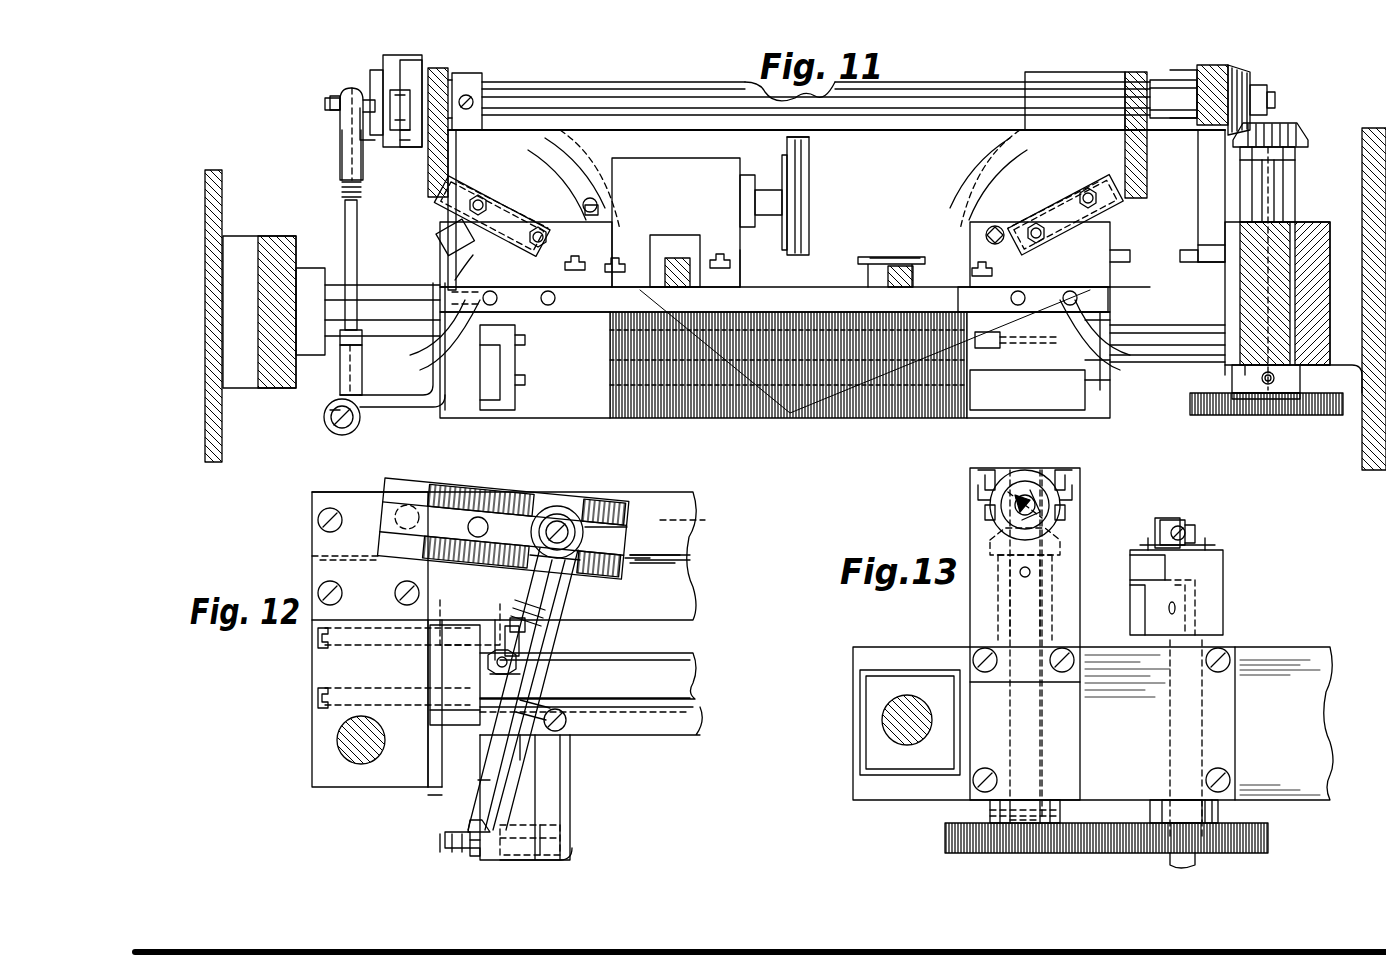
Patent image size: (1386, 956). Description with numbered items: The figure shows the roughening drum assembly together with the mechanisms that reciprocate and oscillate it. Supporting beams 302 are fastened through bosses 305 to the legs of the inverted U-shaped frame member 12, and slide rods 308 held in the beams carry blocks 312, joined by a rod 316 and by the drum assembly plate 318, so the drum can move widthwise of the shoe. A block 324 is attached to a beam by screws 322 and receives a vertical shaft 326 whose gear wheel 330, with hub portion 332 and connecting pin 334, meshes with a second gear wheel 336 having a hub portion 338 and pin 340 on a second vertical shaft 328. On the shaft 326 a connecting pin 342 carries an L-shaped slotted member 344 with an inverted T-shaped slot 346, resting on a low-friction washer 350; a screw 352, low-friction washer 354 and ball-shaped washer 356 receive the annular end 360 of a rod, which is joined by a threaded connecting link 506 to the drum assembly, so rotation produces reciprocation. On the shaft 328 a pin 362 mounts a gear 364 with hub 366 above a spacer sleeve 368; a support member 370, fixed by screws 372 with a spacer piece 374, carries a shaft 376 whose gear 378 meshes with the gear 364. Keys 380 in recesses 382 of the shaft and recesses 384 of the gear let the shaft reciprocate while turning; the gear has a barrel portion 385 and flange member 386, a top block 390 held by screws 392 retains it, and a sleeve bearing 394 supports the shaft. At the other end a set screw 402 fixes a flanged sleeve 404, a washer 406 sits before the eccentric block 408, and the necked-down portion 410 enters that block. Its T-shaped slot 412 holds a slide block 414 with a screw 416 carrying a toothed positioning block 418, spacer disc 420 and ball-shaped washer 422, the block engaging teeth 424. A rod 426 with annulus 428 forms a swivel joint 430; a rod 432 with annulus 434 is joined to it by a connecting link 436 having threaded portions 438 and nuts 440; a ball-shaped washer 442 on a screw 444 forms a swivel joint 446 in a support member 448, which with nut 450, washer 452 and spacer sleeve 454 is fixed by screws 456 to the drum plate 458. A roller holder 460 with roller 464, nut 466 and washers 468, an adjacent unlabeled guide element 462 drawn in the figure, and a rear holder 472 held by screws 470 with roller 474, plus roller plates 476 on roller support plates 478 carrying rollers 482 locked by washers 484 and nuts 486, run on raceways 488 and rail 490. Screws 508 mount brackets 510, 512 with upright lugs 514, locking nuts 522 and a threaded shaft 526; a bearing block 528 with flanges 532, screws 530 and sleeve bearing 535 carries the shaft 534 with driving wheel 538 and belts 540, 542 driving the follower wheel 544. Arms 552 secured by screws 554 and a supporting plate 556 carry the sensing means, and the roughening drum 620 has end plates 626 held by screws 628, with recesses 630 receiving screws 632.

In FIG. 11, the inverted U-shaped frame member 12 is at (208, 172).
In FIG. 11, the drum assembly supporting beams 302 is at (270, 382).
In FIG. 12, the drum assembly supporting beams 302 is at (370, 639).
In FIG. 13, the drum assembly supporting beams 302 is at (900, 647).
In FIG. 11, the bosses 305 is at (238, 236).
In FIG. 11, the drum assembly slide rods 308 is at (1215, 345).
In FIG. 12, the drum assembly slide rods 308 is at (340, 739).
In FIG. 13, the drum assembly slide rods 308 is at (900, 712).
In FIG. 11, the blocks 312 is at (545, 80).
In FIG. 11, the rod 316 is at (702, 90).
In FIG. 11, the drum assembly plate 318 is at (450, 82).
In FIG. 12, the drum assembly plate 318 is at (690, 506).
In FIG. 11, the screws 322 is at (1235, 380).
In FIG. 13, the screws 322 is at (1228, 665).
In FIG. 11, the block 324 is at (1225, 350).
In FIG. 13, the block 324 is at (1122, 650).
In FIG. 13, the vertical shaft 326 is at (1165, 740).
In FIG. 11, the second vertical shaft 328 is at (1300, 185).
In FIG. 13, the second vertical shaft 328 is at (1045, 737).
In FIG. 13, the gear wheel 330 is at (1268, 836).
In FIG. 13, the hub portion 332 is at (1168, 808).
In FIG. 13, the connecting pin 334 is at (1218, 812).
In FIG. 11, the second gear wheel 336 is at (1190, 408).
In FIG. 13, the second gear wheel 336 is at (945, 838).
In FIG. 11, the hub portion 338 is at (1232, 402).
In FIG. 13, the hub portion 338 is at (1065, 810).
In FIG. 11, the connecting pin 340 is at (1272, 382).
In FIG. 13, the connecting pin 340 is at (1065, 810).
In FIG. 13, the connecting pin 342 is at (1180, 608).
In FIG. 13, the L-shaped slotted member 344 is at (1215, 566).
In FIG. 13, the inverted T-shaped slot 346 is at (1140, 558).
In FIG. 13, the low-friction washer 350 is at (1230, 647).
In FIG. 13, the screw 352 is at (1168, 520).
In FIG. 13, the low-friction washer 354 is at (1222, 550).
In FIG. 13, the ball-shaped washer 356 is at (1185, 525).
In FIG. 13, the annular end 360 is at (1192, 535).
In FIG. 11, the connecting pin 362 is at (1300, 142).
In FIG. 13, the connecting pin 362 is at (1018, 580).
In FIG. 11, the gear 364 is at (1298, 130).
In FIG. 13, the gear 364 is at (1068, 545).
In FIG. 11, the hub 366 is at (1298, 160).
In FIG. 13, the hub 366 is at (995, 560).
In FIG. 11, the spacer sleeve 368 is at (1300, 205).
In FIG. 13, the spacer sleeve 368 is at (1055, 627).
In FIG. 11, the support member 370 is at (1198, 250).
In FIG. 13, the support member 370 is at (975, 620).
In FIG. 11, the screws 372 is at (1190, 282).
In FIG. 13, the screws 372 is at (990, 665).
In FIG. 11, the spacer piece 374 is at (1225, 270).
In FIG. 11, the shaft 376 is at (935, 102).
In FIG. 12, the shaft 376 is at (515, 487).
In FIG. 13, the shaft 376 is at (1010, 500).
In FIG. 11, the gear 378 is at (1238, 72).
In FIG. 13, the gear 378 is at (1023, 474).
In FIG. 11, the keys 380 is at (1268, 96).
In FIG. 13, the keys 380 is at (1030, 495).
In FIG. 11, the recesses 382 is at (1171, 99).
In FIG. 13, the recesses 382 is at (1035, 502).
In FIG. 11, the recesses 384 is at (1255, 84).
In FIG. 13, the recesses 384 is at (995, 480).
In FIG. 11, the barrel portion 385 is at (1205, 222).
In FIG. 11, the flange member 386 is at (1210, 150).
In FIG. 11, the top block 390 is at (1198, 68).
In FIG. 13, the top block 390 is at (985, 490).
In FIG. 13, the screws 392 is at (980, 474).
In FIG. 11, the sleeve bearing 394 is at (1090, 78).
In FIG. 11, the set screw 402 is at (478, 102).
In FIG. 11, the flanged sleeve 404 is at (446, 112).
In FIG. 11, the washer 406 is at (438, 75).
In FIG. 11, the eccentric block 408 is at (383, 60).
In FIG. 12, the eccentric block 408 is at (395, 500).
In FIG. 11, the necked-down portion 410 is at (416, 92).
In FIG. 12, the necked-down portion 410 is at (430, 556).
In FIG. 11, the T-shaped slot 412 is at (400, 132).
In FIG. 12, the T-shaped slot 412 is at (620, 526).
In FIG. 11, the T-shaped slide block 414 is at (415, 140).
In FIG. 11, the screw 416 is at (330, 110).
In FIG. 12, the screw 416 is at (502, 525).
In FIG. 11, the toothed positioning block 418 is at (372, 82).
In FIG. 12, the toothed positioning block 418 is at (575, 520).
In FIG. 11, the spacer disc 420 is at (368, 110).
In FIG. 11, the ball-shaped washer 422 is at (342, 120).
In FIG. 12, the ball-shaped washer 422 is at (565, 520).
In FIG. 12, the teeth 424 is at (555, 512).
In FIG. 11, the rod 426 is at (340, 160).
In FIG. 12, the rod 426 is at (545, 590).
In FIG. 11, the annulus 428 is at (352, 100).
In FIG. 12, the annulus 428 is at (590, 562).
In FIG. 11, the swivel joint 430 is at (310, 106).
In FIG. 12, the swivel joint 430 is at (580, 548).
In FIG. 11, the rod 432 is at (342, 388).
In FIG. 12, the rod 432 is at (480, 787).
In FIG. 12, the annulus 434 is at (460, 850).
In FIG. 11, the connecting link 436 is at (346, 250).
In FIG. 12, the connecting link 436 is at (515, 755).
In FIG. 11, the threaded portions 438 is at (356, 194).
In FIG. 12, the threaded portions 438 is at (540, 620).
In FIG. 11, the nuts 440 is at (340, 190).
In FIG. 12, the nuts 440 is at (524, 612).
In FIG. 12, the ball-shaped washer 442 is at (462, 828).
In FIG. 11, the screw 444 is at (355, 420).
In FIG. 12, the screw 444 is at (536, 808).
In FIG. 11, the swivel joint 446 is at (322, 438).
In FIG. 12, the swivel joint 446 is at (404, 840).
In FIG. 11, the support member 448 is at (440, 400).
In FIG. 12, the support member 448 is at (572, 746).
In FIG. 12, the nut 450 is at (455, 840).
In FIG. 12, the washer 452 is at (448, 848).
In FIG. 12, the spacer sleeve 454 is at (528, 855).
In FIG. 11, the screws 456 is at (428, 300).
In FIG. 12, the screws 456 is at (570, 720).
In FIG. 11, the drum plate 458 is at (818, 287).
In FIG. 12, the drum plate 458 is at (698, 742).
In FIG. 11, the roller holder 460 is at (403, 310).
In FIG. 12, the roller holder 460 is at (588, 682).
In FIG. 12, the guide 462 is at (520, 660).
In FIG. 11, the roller 464 is at (497, 292).
In FIG. 12, the roller 464 is at (480, 674).
In FIG. 11, the nut 466 is at (440, 240).
In FIG. 12, the nut 466 is at (525, 660).
In FIG. 11, the washers 468 is at (445, 258).
In FIG. 12, the washers 468 is at (525, 678).
In FIG. 11, the screws 470 is at (1120, 345).
In FIG. 11, the roller holder 472 is at (1103, 357).
In FIG. 11, the roller 474 is at (1118, 260).
In FIG. 11, the roller plate 476 is at (470, 210).
In FIG. 12, the roller plate 476 is at (510, 618).
In FIG. 11, the roller support plates 478 is at (496, 192).
In FIG. 12, the roller support plates 478 is at (478, 620).
In FIG. 11, the rollers 482 is at (596, 200).
In FIG. 12, the rollers 482 is at (400, 600).
In FIG. 12, the washers 484 is at (500, 625).
In FIG. 11, the nuts 486 is at (1138, 208).
In FIG. 12, the nuts 486 is at (520, 636).
In FIG. 11, the raceways 488 is at (548, 152).
In FIG. 12, the raceways 488 is at (432, 724).
In FIG. 11, the raised rail 490 is at (560, 165).
In FIG. 12, the raised rail 490 is at (448, 788).
In FIG. 13, the threaded connecting link 506 is at (1183, 529).
In FIG. 11, the screws 508 is at (585, 250).
In FIG. 11, the bracket 510 is at (590, 265).
In FIG. 11, the bracket 512 is at (1033, 295).
In FIG. 11, the upright lugs 514 is at (590, 235).
In FIG. 11, the locking nuts 522 is at (592, 215).
In FIG. 11, the threaded shaft 526 is at (809, 292).
In FIG. 11, the bearing block 528 is at (700, 165).
In FIG. 11, the screws 530 is at (725, 258).
In FIG. 11, the flanges 532 is at (730, 272).
In FIG. 11, the shaft 534 is at (772, 195).
In FIG. 11, the sleeve bearing 535 is at (745, 198).
In FIG. 11, the driving wheel 538 is at (798, 180).
In FIG. 11, the belt 540 is at (505, 366).
In FIG. 11, the belt 542 is at (800, 138).
In FIG. 11, the follower wheel 544 is at (515, 400).
In FIG. 11, the arms 552 is at (775, 295).
In FIG. 11, the screws 554 is at (680, 250).
In FIG. 11, the supporting plate 556 is at (868, 262).
In FIG. 11, the roughening drum 620 is at (829, 416).
In FIG. 11, the end plates 626 is at (1080, 398).
In FIG. 11, the screws 628 is at (1010, 350).
In FIG. 11, the recesses 630 is at (1040, 361).
In FIG. 11, the screws 632 is at (1027, 385).